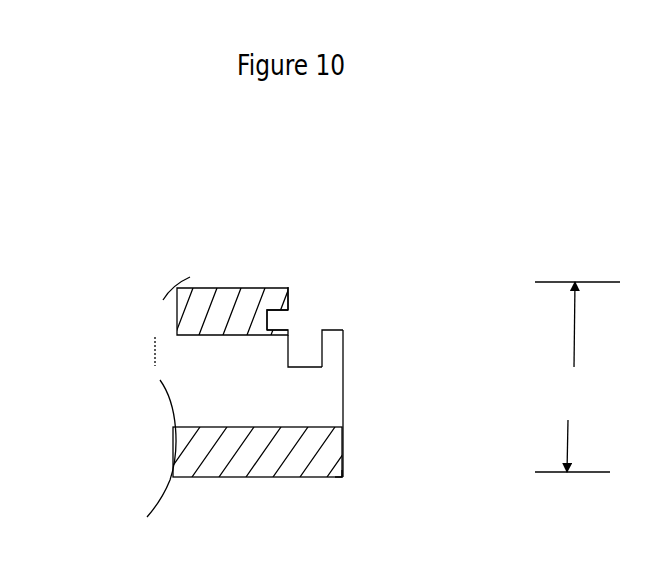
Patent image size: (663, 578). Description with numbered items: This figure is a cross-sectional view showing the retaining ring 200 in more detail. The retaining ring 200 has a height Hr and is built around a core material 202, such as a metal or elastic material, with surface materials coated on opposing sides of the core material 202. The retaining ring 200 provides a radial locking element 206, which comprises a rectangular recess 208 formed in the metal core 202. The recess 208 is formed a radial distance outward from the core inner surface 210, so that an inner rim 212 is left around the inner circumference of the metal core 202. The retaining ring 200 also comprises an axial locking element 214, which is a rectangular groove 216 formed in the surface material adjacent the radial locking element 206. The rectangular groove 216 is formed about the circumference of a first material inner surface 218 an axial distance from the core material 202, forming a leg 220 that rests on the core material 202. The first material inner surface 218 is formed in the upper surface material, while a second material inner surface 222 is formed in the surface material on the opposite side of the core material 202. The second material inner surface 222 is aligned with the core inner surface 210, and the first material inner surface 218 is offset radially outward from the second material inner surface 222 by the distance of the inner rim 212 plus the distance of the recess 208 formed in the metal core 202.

The retaining ring 200 is at (100, 230).
The core material 202 is at (160, 382).
The radial locking element 206 is at (382, 405).
The rectangular recess 208 is at (310, 333).
The core inner surface 210 is at (348, 384).
The inner rim 212 is at (335, 350).
The axial locking element 214 is at (373, 217).
The rectangular groove 216 is at (285, 320).
The first material inner surface 218 is at (268, 287).
The leg 220 is at (267, 320).
The second material inner surface 222 is at (343, 453).